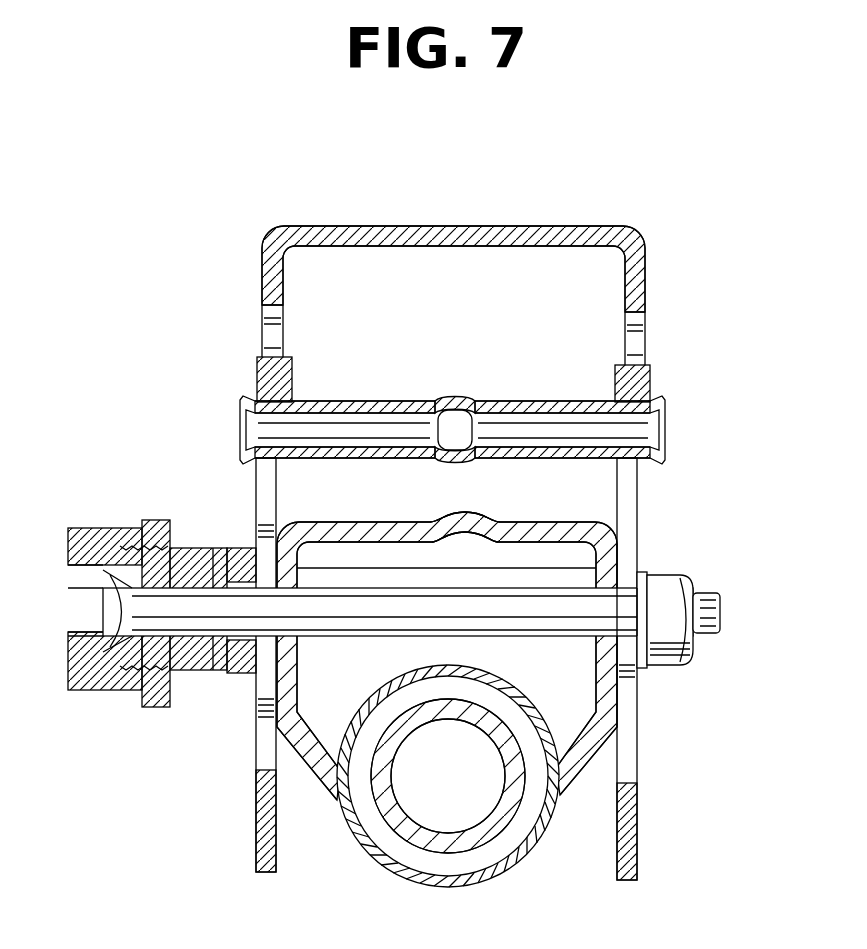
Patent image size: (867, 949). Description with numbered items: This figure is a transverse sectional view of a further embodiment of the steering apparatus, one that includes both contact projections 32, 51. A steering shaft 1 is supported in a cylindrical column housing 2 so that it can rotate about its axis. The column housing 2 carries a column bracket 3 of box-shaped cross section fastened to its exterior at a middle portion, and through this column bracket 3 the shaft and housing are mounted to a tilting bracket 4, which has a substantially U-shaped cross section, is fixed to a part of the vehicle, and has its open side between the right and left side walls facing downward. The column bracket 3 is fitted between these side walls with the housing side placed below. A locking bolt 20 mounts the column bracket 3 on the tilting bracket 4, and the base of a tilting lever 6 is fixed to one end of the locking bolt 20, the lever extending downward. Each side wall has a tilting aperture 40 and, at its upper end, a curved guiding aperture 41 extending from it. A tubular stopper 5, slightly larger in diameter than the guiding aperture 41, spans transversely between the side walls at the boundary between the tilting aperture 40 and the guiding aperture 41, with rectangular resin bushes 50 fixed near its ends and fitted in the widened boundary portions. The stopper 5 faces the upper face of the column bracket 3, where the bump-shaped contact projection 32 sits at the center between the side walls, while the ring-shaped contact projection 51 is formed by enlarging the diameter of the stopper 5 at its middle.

The steering shaft 1 is at (493, 832).
The column housing 2 is at (390, 866).
The column bracket 3 is at (616, 568).
The tilting bracket 4 is at (404, 227).
The stopper 5 is at (512, 401).
The tilting lever 6 is at (196, 548).
The locking bolt 20 is at (578, 636).
The contact projection 32 is at (462, 515).
The tilting aperture 40 is at (256, 775).
The guiding aperture 41 is at (262, 313).
The bush 50 is at (257, 380).
The contact projection 51 is at (445, 459).